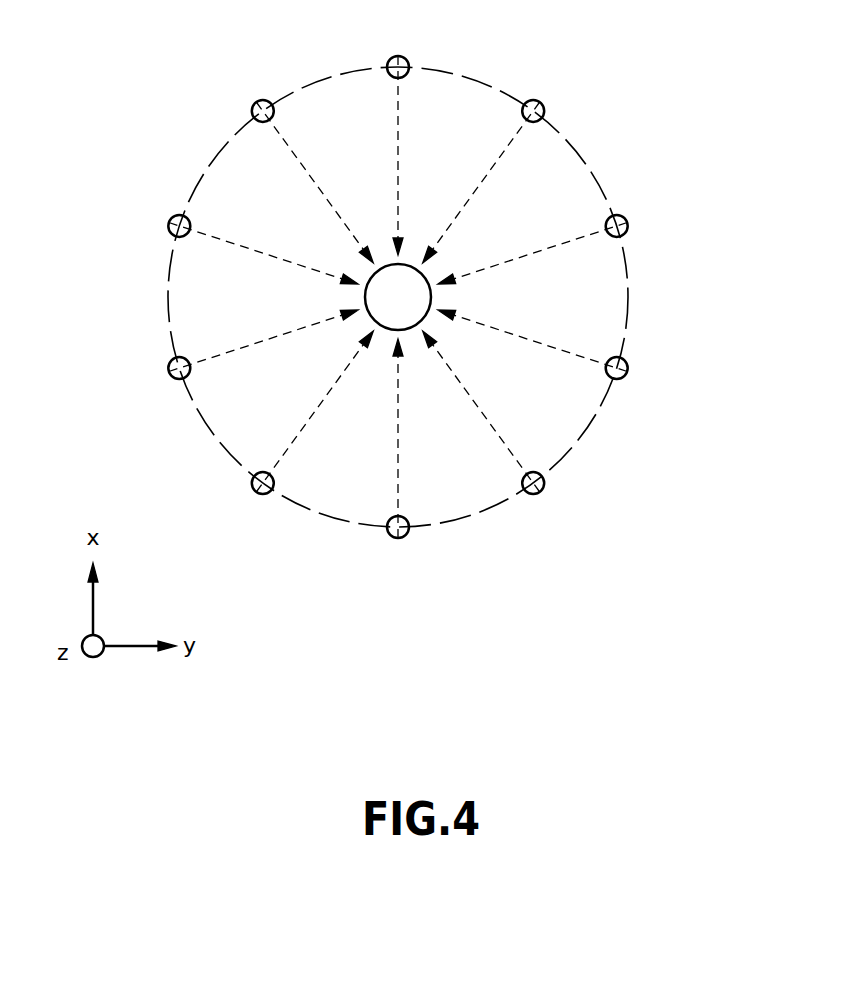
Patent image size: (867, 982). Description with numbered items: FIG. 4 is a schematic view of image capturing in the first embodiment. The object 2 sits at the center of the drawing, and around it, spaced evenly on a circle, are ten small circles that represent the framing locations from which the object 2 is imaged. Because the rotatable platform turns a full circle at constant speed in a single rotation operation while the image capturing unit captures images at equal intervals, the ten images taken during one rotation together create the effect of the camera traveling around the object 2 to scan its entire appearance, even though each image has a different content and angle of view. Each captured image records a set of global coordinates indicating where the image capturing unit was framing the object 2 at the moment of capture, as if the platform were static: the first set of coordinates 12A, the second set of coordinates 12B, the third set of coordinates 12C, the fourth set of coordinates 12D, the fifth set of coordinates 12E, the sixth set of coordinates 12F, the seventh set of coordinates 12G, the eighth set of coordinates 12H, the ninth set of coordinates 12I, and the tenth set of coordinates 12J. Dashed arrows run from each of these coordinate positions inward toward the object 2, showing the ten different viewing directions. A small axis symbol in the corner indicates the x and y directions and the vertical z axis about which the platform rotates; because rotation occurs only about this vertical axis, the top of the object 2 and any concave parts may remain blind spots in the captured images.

The object 2 is at (398, 297).
The first set of coordinates 12A is at (287, 427).
The second set of coordinates 12B is at (397, 456).
The third set of coordinates 12C is at (507, 423).
The fourth set of coordinates 12D is at (561, 349).
The fifth set of coordinates 12E is at (559, 248).
The sixth set of coordinates 12F is at (505, 166).
The seventh set of coordinates 12G is at (397, 137).
The eighth set of coordinates 12H is at (292, 168).
The ninth set of coordinates 12I is at (234, 248).
The tenth set of coordinates 12J is at (234, 347).